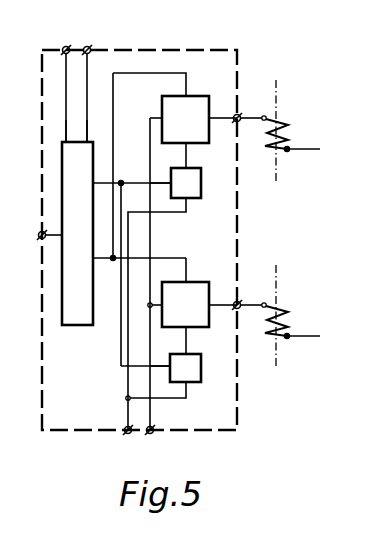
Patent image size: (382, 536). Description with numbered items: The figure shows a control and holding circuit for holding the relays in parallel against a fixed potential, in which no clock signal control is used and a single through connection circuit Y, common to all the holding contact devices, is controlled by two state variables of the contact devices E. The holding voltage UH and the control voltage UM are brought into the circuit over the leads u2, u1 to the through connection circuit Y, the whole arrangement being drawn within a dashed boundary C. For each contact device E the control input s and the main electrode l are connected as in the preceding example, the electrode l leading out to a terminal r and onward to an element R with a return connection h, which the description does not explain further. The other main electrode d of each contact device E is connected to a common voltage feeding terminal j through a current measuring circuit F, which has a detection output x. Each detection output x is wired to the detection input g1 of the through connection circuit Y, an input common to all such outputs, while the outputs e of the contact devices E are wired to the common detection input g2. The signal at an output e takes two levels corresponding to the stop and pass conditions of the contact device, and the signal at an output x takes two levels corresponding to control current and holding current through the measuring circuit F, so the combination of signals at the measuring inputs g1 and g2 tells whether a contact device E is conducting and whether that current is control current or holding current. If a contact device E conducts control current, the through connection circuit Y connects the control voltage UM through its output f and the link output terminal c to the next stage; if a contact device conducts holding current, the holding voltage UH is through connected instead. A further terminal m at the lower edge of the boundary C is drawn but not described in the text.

The control unit enclosure C is at (169, 48).
The holding voltage UH is at (61, 82).
The control voltage UM is at (93, 82).
The input lead u2 is at (63, 141).
The input lead u1 is at (87, 140).
The through connection circuit Y is at (77, 327).
The link output terminal c is at (38, 233).
The output f is at (60, 235).
The detection input g1 is at (121, 181).
The common detection input g2 is at (113, 259).
The output e is at (187, 95).
The control input s is at (160, 118).
The contact device E is at (209, 143).
The main electrode l is at (214, 119).
The output terminal r is at (240, 120).
The heating resistor R is at (289, 139).
The return lead h is at (319, 148).
The main electrode d is at (185, 153).
The detection output x is at (171, 181).
The current measuring circuit F is at (202, 187).
The common voltage feeding terminal j is at (127, 436).
The output terminal m is at (149, 436).